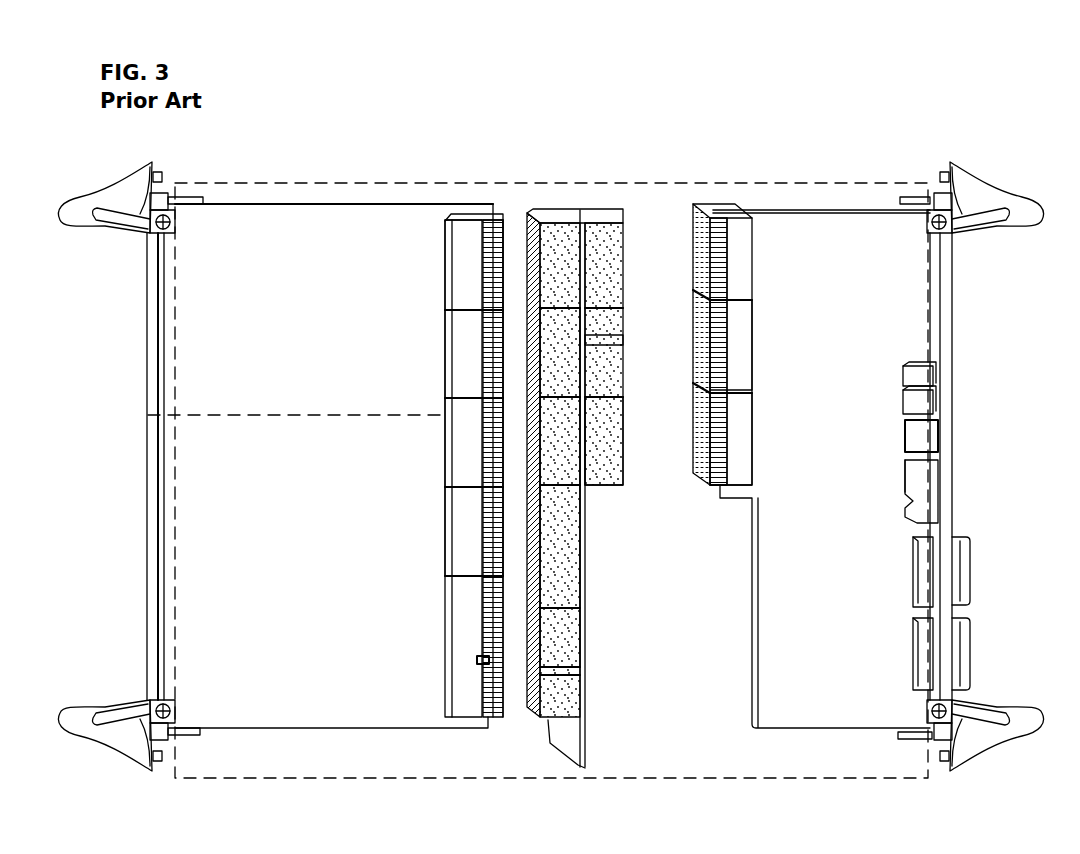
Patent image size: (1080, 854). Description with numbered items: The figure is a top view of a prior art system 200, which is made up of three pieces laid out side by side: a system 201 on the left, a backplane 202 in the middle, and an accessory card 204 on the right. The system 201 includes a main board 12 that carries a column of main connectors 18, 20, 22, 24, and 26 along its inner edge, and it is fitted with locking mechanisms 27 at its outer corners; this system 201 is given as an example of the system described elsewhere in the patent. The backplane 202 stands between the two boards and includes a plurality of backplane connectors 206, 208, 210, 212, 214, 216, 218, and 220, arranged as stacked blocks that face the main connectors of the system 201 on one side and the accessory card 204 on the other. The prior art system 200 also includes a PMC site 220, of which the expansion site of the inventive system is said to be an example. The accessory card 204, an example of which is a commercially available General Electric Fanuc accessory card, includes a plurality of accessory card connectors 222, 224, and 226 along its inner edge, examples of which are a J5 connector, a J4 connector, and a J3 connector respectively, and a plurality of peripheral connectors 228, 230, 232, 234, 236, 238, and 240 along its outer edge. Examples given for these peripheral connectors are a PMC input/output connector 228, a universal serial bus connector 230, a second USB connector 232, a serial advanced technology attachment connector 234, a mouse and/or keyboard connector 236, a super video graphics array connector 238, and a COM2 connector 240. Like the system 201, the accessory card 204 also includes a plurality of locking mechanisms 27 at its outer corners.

The main board 12 is at (306, 713).
The main connector 18 is at (470, 235).
The main connector 20 is at (452, 352).
The main connector 22 is at (452, 445).
The main connector 24 is at (450, 527).
The main connector 26 is at (450, 622).
The locking mechanism 27 is at (118, 200).
The prior art system 200 is at (886, 136).
The system 201 is at (337, 168).
The backplane 202 is at (526, 745).
The accessory card 204 is at (818, 752).
The backplane connector 206 is at (553, 228).
The backplane connector 208 is at (568, 375).
The backplane connector 210 is at (575, 472).
The backplane connector 212 is at (568, 560).
The backplane connector 214 is at (570, 630).
The backplane connector 216 is at (617, 228).
The backplane connector 218 is at (605, 325).
The PMC site 220 is at (239, 417).
The accessory card connector 222 is at (752, 275).
The accessory card connector 224 is at (748, 350).
The accessory card connector 226 is at (745, 435).
The peripheral connector 228 is at (937, 290).
The peripheral connector 230 is at (920, 378).
The peripheral connector 232 is at (922, 402).
The peripheral connector 234 is at (922, 437).
The peripheral connector 236 is at (920, 507).
The peripheral connector 238 is at (935, 572).
The peripheral connector 240 is at (935, 655).